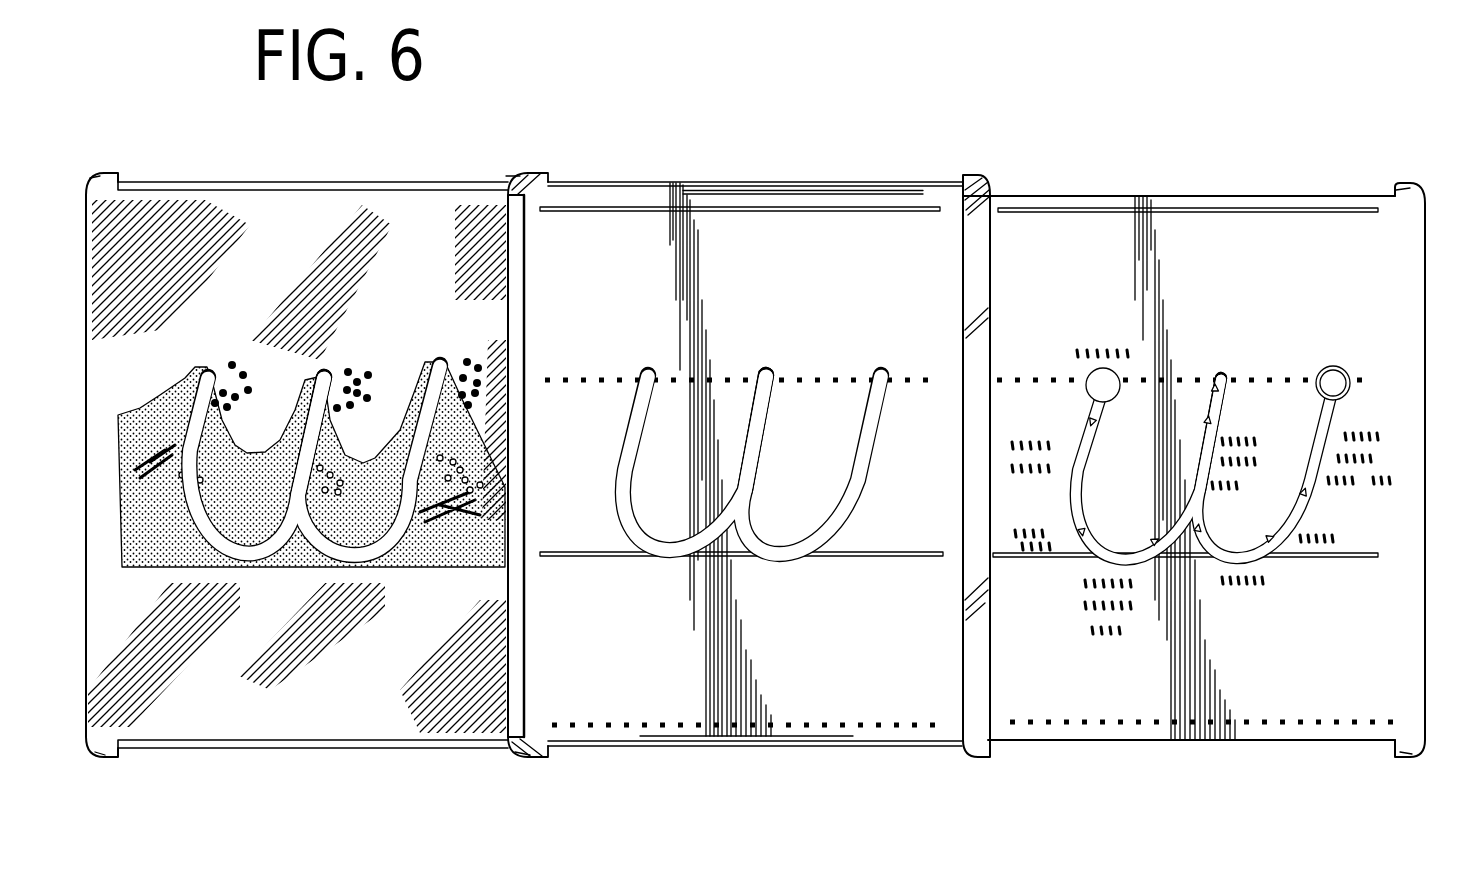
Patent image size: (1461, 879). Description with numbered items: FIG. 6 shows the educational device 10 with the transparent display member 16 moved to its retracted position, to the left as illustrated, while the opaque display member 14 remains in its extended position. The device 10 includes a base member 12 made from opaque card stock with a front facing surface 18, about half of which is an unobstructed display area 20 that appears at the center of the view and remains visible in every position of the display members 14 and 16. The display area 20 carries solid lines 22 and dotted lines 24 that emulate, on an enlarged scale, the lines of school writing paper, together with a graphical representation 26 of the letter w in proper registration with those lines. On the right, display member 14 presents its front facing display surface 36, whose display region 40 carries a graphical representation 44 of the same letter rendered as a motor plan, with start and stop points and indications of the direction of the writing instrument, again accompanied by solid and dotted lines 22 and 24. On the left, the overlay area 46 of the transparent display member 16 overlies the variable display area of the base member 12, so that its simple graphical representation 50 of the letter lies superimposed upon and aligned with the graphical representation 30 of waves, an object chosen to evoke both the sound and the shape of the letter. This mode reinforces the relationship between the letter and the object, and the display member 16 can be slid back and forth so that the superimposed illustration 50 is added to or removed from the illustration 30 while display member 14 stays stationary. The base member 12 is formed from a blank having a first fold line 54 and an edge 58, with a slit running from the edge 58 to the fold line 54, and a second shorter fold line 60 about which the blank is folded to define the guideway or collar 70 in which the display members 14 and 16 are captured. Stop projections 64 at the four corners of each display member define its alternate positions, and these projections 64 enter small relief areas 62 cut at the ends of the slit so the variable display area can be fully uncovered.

The educational device 10 is at (886, 108).
The base member 12 is at (812, 181).
The display member 14 is at (1326, 311).
The display member 16 is at (255, 262).
The front facing surface 18 is at (638, 228).
The unobstructed display area 20 is at (835, 314).
The solid lines 22 is at (918, 214).
The dotted lines 24 is at (598, 379).
The graphical representation of the letter 26 is at (761, 437).
The graphical representation of an object 30 is at (425, 400).
The front facing display surface 36 is at (1073, 718).
The display area region 40 is at (1075, 296).
The graphical representation of the letter 44 is at (1232, 410).
The overlay area 46 is at (298, 711).
The graphical representation of the letter 50 is at (302, 398).
The fold line 54 is at (728, 183).
The edge 58 is at (382, 749).
The fold line 60 is at (737, 748).
The relief areas 62 is at (526, 176).
The stop projections 64 is at (105, 172).
The guideway or collar 70 is at (842, 700).